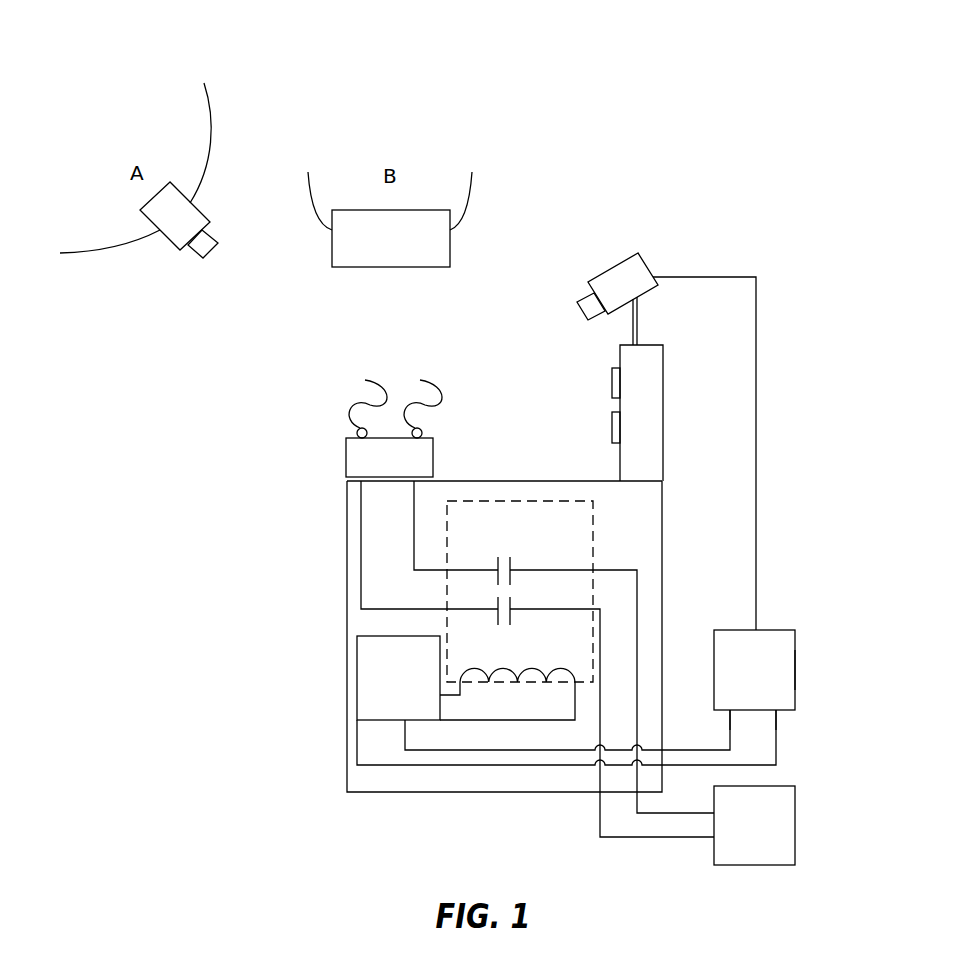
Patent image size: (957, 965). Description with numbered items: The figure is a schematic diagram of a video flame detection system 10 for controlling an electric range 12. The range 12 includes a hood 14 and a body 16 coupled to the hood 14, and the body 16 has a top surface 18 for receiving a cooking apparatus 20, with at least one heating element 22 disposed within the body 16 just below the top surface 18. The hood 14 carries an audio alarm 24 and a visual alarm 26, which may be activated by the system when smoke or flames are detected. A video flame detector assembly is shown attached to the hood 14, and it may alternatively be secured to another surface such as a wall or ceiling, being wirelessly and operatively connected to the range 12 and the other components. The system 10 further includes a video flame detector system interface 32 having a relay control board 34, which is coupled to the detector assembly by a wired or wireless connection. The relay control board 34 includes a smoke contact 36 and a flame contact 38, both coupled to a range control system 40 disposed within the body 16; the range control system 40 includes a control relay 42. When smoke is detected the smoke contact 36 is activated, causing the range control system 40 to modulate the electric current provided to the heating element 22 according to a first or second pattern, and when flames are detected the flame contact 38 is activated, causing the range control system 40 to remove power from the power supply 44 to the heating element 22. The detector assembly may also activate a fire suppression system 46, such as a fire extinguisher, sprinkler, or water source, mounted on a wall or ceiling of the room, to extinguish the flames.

The video flame detection system 10 is at (547, 101).
The range 12 is at (338, 587).
The hood 14 is at (665, 409).
The body 16 is at (346, 541).
The top surface 18 is at (466, 480).
The cooking apparatus 20 is at (433, 452).
The heating element 22 is at (346, 478).
The audio alarm 24 is at (612, 385).
The visual alarm 26 is at (612, 428).
The video flame detector system interface 32 is at (790, 630).
The relay control board 34 is at (797, 670).
The smoke contact 36 is at (725, 718).
The flame contact 38 is at (780, 716).
The range control system 40 is at (357, 686).
The control relay 42 is at (505, 530).
The power supply 44 is at (797, 826).
The fire suppression system 46 is at (403, 246).